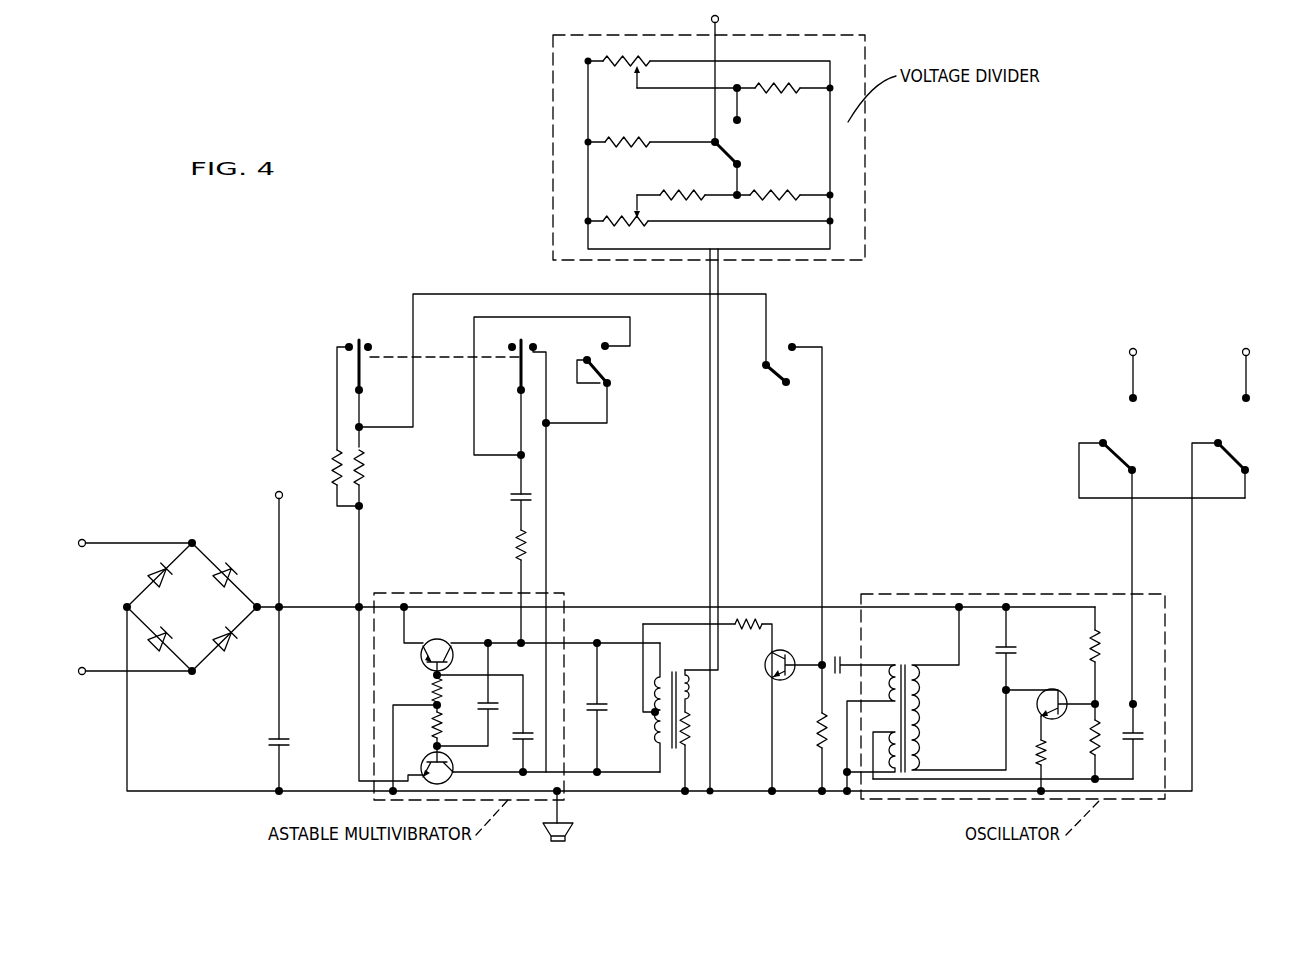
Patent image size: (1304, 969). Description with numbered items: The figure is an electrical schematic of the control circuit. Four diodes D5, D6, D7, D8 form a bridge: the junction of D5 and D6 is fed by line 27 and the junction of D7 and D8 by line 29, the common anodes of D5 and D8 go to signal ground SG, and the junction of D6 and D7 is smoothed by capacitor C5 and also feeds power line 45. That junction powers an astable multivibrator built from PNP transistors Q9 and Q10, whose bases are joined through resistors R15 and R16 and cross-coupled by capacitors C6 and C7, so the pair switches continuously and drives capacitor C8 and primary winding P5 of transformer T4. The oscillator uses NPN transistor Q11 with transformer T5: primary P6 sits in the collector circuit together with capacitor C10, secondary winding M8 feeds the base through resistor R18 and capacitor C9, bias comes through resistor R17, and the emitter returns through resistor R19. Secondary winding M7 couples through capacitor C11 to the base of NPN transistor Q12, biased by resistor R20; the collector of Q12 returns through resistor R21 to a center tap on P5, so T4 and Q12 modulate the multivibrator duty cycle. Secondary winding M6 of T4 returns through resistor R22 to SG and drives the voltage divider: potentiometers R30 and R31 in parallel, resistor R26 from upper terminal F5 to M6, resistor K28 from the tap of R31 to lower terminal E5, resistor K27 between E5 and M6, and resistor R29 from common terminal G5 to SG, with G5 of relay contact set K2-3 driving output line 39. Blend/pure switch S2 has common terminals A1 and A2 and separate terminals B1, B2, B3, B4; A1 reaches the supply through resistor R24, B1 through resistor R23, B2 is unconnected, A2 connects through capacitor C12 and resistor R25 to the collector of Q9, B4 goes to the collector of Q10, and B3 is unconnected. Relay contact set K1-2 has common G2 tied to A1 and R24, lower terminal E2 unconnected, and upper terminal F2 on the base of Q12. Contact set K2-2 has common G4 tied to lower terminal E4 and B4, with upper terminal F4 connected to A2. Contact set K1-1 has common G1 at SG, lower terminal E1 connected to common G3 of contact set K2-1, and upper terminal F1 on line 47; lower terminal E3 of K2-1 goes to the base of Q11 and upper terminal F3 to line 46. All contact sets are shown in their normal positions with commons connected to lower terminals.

The output line 39 is at (715, 47).
The line 27 is at (138, 542).
The line 29 is at (116, 666).
The line 45 is at (279, 562).
The line 46 is at (1128, 374).
The line 47 is at (1242, 374).
The diode D5 is at (146, 574).
The diode D6 is at (234, 564).
The diode D7 is at (230, 648).
The diode D8 is at (168, 628).
The smoothing capacitor C5 is at (290, 738).
The resistor R23 is at (332, 470).
The resistor R24 is at (364, 474).
The switch terminal B1 is at (352, 345).
The switch terminal B2 is at (367, 346).
The common terminal A1 is at (372, 397).
The double pole-double throw switch S2 is at (458, 357).
The switch terminal B3 is at (514, 346).
The switch terminal B4 is at (532, 346).
The common terminal A2 is at (519, 392).
The upper terminal F4 is at (604, 344).
The common terminal G4 is at (586, 359).
The relay contact set K2-2 is at (594, 376).
The lower terminal E4 is at (588, 402).
The capacitor C12 is at (511, 496).
The resistor R25 is at (516, 552).
The upper terminal F2 is at (792, 344).
The common terminal G2 is at (766, 370).
The relay contact set K1-2 is at (777, 374).
The lower terminal E2 is at (786, 386).
The upper terminal F3 is at (1142, 396).
The upper terminal F1 is at (1254, 396).
The common terminal G3 is at (1108, 440).
The relay contact set K2-1 is at (1116, 458).
The lower terminal E3 is at (1136, 472).
The common terminal G1 is at (1217, 440).
The relay contact set K1-1 is at (1226, 458).
The lower terminal E1 is at (1249, 472).
The potentiometer R30 is at (648, 53).
The resistor R29 is at (647, 129).
The potentiometer R31 is at (652, 226).
The upper terminal F5 is at (732, 116).
The resistor R26 is at (803, 79).
The relay contact set K2-3 is at (740, 136).
The common terminal G5 is at (713, 138).
The lower terminal E5 is at (739, 166).
The resistor K28 is at (706, 185).
The resistor K27 is at (811, 185).
The PNP transistor Q9 is at (449, 638).
The resistor R15 is at (431, 697).
The resistor R16 is at (431, 746).
The cross-coupling capacitor C6 is at (487, 703).
The cross-coupling capacitor C7 is at (519, 736).
The PNP transistor Q10 is at (453, 762).
The capacitor C8 is at (600, 717).
The signal ground SG is at (568, 836).
The secondary winding M6 is at (700, 655).
The primary winding P5 is at (658, 743).
The transformer T4 is at (678, 724).
The resistor R22 is at (702, 717).
The resistor R21 is at (765, 599).
The NPN transistor Q12 is at (765, 665).
The capacitor C11 is at (854, 646).
The resistor R20 is at (803, 730).
The transformer T5 is at (900, 705).
The secondary winding M7 is at (871, 728).
The primary winding P6 is at (923, 724).
The secondary winding M8 is at (888, 751).
The capacitor C10 is at (1009, 645).
The resistor R17 is at (1100, 654).
The NPN transistor Q11 is at (1058, 694).
The resistor R19 is at (1044, 756).
The resistor R18 is at (1096, 752).
The capacitor C9 is at (1146, 738).